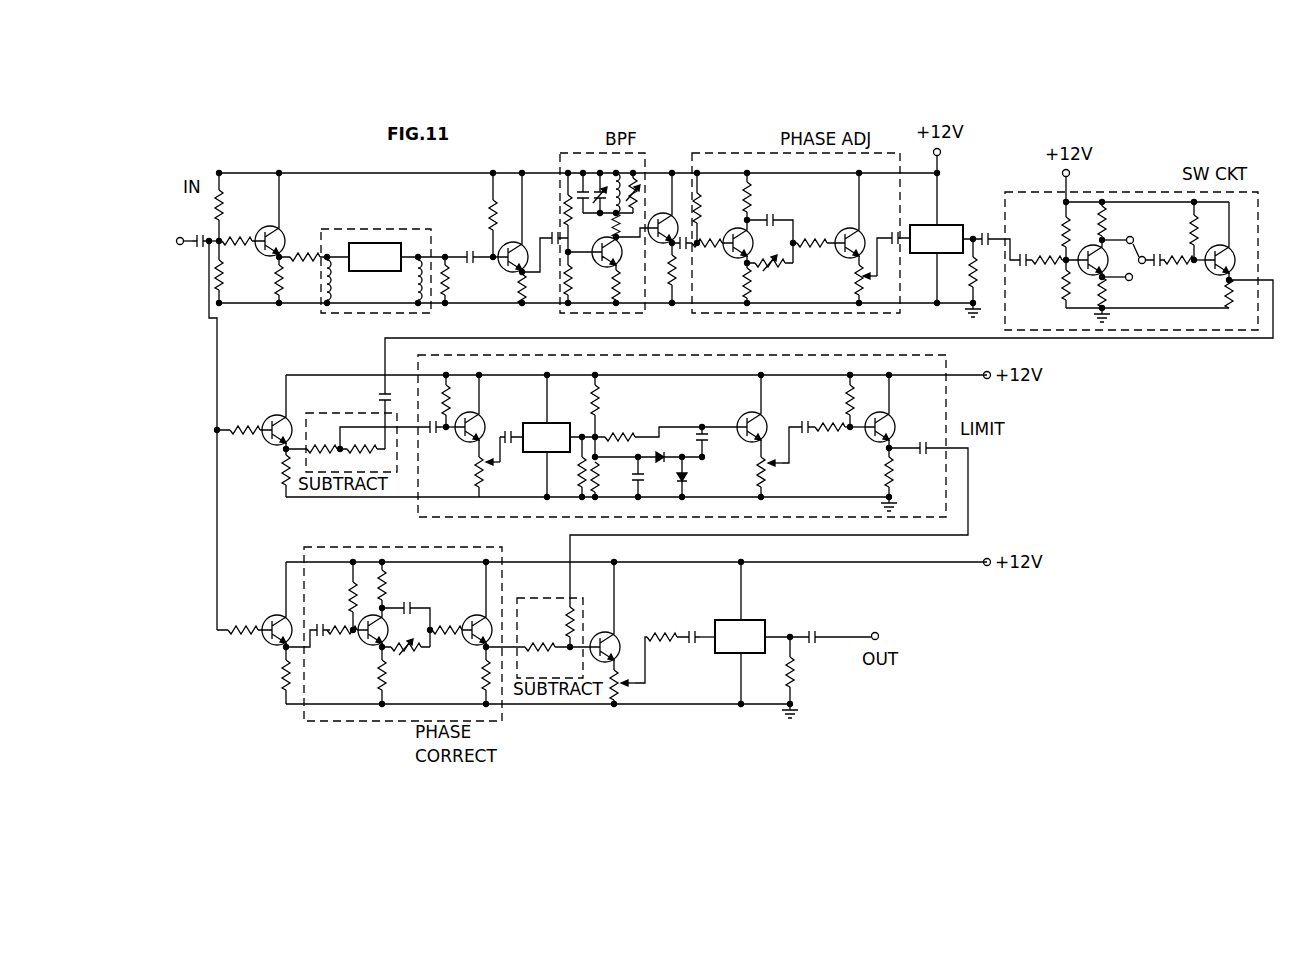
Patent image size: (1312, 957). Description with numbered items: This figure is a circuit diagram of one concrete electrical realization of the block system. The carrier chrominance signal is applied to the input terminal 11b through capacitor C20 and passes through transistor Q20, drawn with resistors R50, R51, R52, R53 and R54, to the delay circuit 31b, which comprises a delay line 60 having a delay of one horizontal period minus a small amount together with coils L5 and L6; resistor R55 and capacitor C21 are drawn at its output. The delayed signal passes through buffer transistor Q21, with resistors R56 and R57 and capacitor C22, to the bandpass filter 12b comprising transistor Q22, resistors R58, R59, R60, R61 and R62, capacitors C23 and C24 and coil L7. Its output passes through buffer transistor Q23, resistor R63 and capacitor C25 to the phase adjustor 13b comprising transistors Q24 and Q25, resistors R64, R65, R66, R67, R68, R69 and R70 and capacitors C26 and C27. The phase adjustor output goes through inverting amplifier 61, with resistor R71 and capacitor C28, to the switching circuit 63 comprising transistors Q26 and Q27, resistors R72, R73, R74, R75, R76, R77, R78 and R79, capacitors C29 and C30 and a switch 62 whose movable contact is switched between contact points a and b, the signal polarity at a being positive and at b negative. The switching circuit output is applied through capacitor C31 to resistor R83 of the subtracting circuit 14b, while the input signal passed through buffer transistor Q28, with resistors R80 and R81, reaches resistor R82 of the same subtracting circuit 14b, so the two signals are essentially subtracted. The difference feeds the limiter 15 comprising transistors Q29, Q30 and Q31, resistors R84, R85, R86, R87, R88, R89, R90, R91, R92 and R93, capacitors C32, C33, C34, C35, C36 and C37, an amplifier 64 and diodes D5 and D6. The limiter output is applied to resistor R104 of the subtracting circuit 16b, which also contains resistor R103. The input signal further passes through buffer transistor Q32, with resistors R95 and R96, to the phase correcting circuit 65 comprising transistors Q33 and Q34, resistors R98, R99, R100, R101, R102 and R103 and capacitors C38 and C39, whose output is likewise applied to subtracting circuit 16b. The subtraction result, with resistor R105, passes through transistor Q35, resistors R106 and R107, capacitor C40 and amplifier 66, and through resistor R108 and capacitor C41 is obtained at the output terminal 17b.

The input terminal 11b is at (181, 237).
The bandpass filter 12b is at (576, 153).
The phase adjustor 13b is at (737, 153).
The subtracting circuit 14b is at (340, 413).
The limiter 15 is at (946, 405).
The subtracting circuit 16b is at (553, 598).
The output terminal 17b is at (878, 632).
The delay circuit 31b is at (373, 229).
The delay line 60 is at (357, 243).
The inverting amplifier 61 is at (945, 225).
The switch 62 is at (1137, 268).
The switching circuit 63 is at (1155, 192).
The amplifier 64 is at (522, 423).
The phase correcting circuit 65 is at (338, 722).
The amplifier 66 is at (750, 620).
The contact point a is at (1122, 232).
The contact point b is at (1117, 285).
The transistor Q20 is at (286, 219).
The buffer transistor Q21 is at (512, 223).
The transistor Q22 is at (595, 260).
The buffer transistor Q23 is at (648, 214).
The transistor Q24 is at (730, 235).
The transistor Q25 is at (844, 219).
The transistor Q26 is at (1090, 244).
The transistor Q27 is at (829, 295).
The buffer transistor Q28 is at (271, 415).
The transistor Q29 is at (485, 416).
The transistor Q30 is at (767, 416).
The transistor Q31 is at (896, 416).
The buffer transistor Q32 is at (271, 611).
The transistor Q33 is at (393, 630).
The transistor Q34 is at (473, 611).
The transistor Q35 is at (622, 616).
The resistor R50 is at (238, 207).
The resistor R51 is at (238, 272).
The resistor R52 is at (238, 229).
The resistor R53 is at (299, 284).
The resistor R54 is at (303, 248).
The resistor R55 is at (463, 280).
The resistor R56 is at (474, 215).
The resistor R57 is at (507, 289).
The resistor R58 is at (540, 204).
The resistor R59 is at (562, 288).
The resistor R60 is at (640, 182).
The resistor R61 is at (598, 225).
The resistor R62 is at (612, 298).
The resistor R63 is at (672, 290).
The resistor R64 is at (713, 208).
The resistor R65 is at (703, 250).
The resistor R66 is at (764, 192).
The resistor R67 is at (743, 296).
The resistor R68 is at (770, 273).
The resistor R69 is at (814, 252).
The resistor R70 is at (848, 284).
The resistor R71 is at (986, 278).
The resistor R72 is at (1039, 272).
The resistor R73 is at (1050, 235).
The resistor R74 is at (1062, 292).
The resistor R75 is at (1119, 221).
The resistor R76 is at (1106, 295).
The resistor R77 is at (1184, 273).
The resistor R78 is at (1179, 231).
The resistor R79 is at (1226, 295).
The resistor R80 is at (239, 440).
The resistor R81 is at (267, 476).
The resistor R82 is at (355, 439).
The resistor R83 is at (362, 459).
The resistor R84 is at (427, 401).
The resistor R85 is at (470, 477).
The resistor R86 is at (506, 485).
The resistor R87 is at (578, 478).
The resistor R88 is at (614, 416).
The resistor R89 is at (601, 482).
The resistor R90 is at (671, 428).
The resistor R91 is at (780, 477).
The resistor R92 is at (840, 439).
The resistor R93 is at (833, 401).
The resistor R95 is at (239, 645).
The resistor R96 is at (268, 682).
The resistor R98 is at (340, 646).
The resistor R99 is at (402, 581).
The resistor R100 is at (360, 682).
The resistor R101 is at (409, 658).
The resistor R102 is at (454, 645).
The resistor R103 is at (467, 682).
The resistor R104 is at (538, 658).
The resistor R105 is at (548, 625).
The potentiometer R106 is at (620, 696).
The resistor R107 is at (663, 658).
The resistor R108 is at (813, 677).
The capacitor C20 is at (195, 254).
The capacitor C21 is at (469, 248).
The capacitor C22 is at (545, 241).
The capacitor C23 is at (580, 190).
The capacitor C24 is at (600, 182).
The capacitor C25 is at (694, 254).
The capacitor C26 is at (778, 229).
The capacitor C27 is at (891, 238).
The capacitor C28 is at (989, 232).
The capacitor C29 is at (1032, 246).
The capacitor C30 is at (1165, 248).
The capacitor C31 is at (369, 415).
The capacitor C32 is at (437, 443).
The capacitor C33 is at (512, 453).
The capacitor C34 is at (643, 484).
The capacitor C35 is at (705, 431).
The capacitor C36 is at (809, 431).
The capacitor C37 is at (769, 524).
The capacitor C38 is at (312, 624).
The capacitor C39 is at (414, 616).
The capacitor C40 is at (697, 623).
The capacitor C41 is at (837, 623).
The coil L5 is at (342, 280).
The coil L6 is at (410, 280).
The coil L7 is at (626, 182).
The diode D5 is at (648, 447).
The diode D6 is at (695, 477).